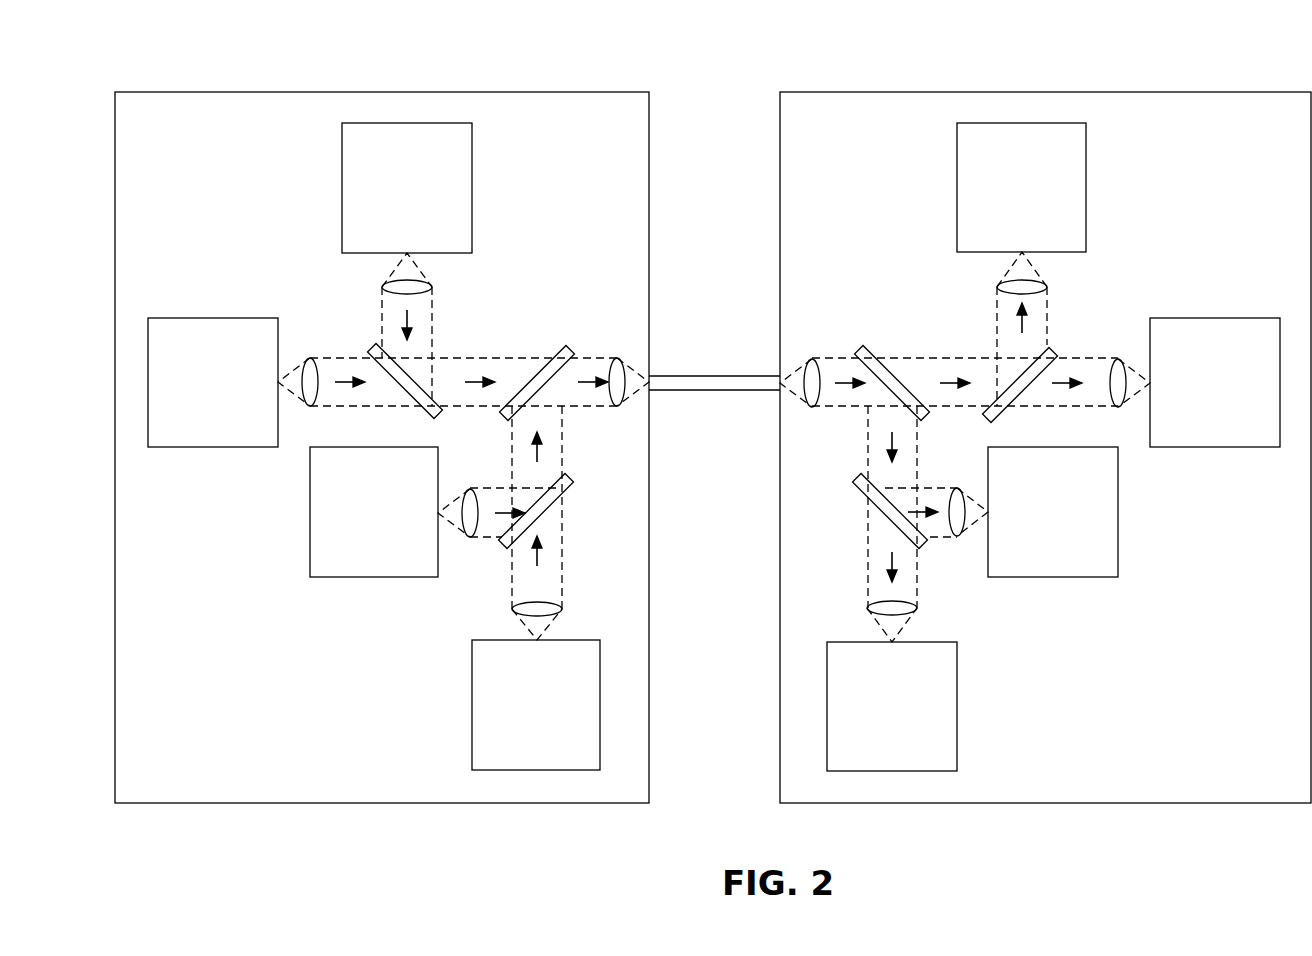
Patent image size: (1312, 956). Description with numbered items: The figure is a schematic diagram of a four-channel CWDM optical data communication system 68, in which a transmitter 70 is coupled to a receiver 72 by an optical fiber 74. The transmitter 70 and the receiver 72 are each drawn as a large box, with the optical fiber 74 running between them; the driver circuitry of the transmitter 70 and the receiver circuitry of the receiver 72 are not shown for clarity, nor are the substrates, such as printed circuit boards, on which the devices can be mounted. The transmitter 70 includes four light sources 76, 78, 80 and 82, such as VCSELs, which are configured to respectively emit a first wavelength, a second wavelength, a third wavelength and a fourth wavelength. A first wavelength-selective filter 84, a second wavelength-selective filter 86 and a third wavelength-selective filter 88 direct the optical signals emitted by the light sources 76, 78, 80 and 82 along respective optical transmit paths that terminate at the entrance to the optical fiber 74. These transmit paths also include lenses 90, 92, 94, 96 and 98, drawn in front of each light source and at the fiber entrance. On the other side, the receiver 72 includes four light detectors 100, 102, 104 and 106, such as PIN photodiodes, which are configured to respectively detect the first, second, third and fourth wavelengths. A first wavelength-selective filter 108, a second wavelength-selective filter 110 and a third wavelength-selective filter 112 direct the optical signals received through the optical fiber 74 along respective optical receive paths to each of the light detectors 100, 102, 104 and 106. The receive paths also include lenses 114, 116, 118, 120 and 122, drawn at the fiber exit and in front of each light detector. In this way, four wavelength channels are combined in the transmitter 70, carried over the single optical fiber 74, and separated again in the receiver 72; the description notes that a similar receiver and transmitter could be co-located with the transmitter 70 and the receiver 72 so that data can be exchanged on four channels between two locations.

The four-channel CWDM optical data communication system 68 is at (710, 52).
The transmitter 70 is at (340, 803).
The receiver 72 is at (1085, 803).
The optical fiber 74 is at (712, 376).
The light source 76 is at (342, 175).
The light source 78 is at (215, 318).
The light source 80 is at (310, 531).
The light source 82 is at (472, 715).
The first wavelength-selective filter 84 is at (371, 345).
The second wavelength-selective filter 86 is at (579, 475).
The third wavelength-selective filter 88 is at (571, 347).
The lens 90 is at (432, 288).
The lens 92 is at (308, 406).
The lens 94 is at (470, 537).
The lens 96 is at (562, 609).
The lens 98 is at (617, 406).
The light detector 100 is at (1086, 175).
The light detector 102 is at (1216, 318).
The light detector 104 is at (1118, 535).
The light detector 106 is at (957, 718).
The first wavelength-selective filter 108 is at (1057, 346).
The second wavelength-selective filter 110 is at (853, 473).
The third wavelength-selective filter 112 is at (857, 346).
The lens 114 is at (997, 288).
The lens 116 is at (1118, 407).
The lens 118 is at (957, 537).
The lens 120 is at (868, 609).
The lens 122 is at (812, 407).